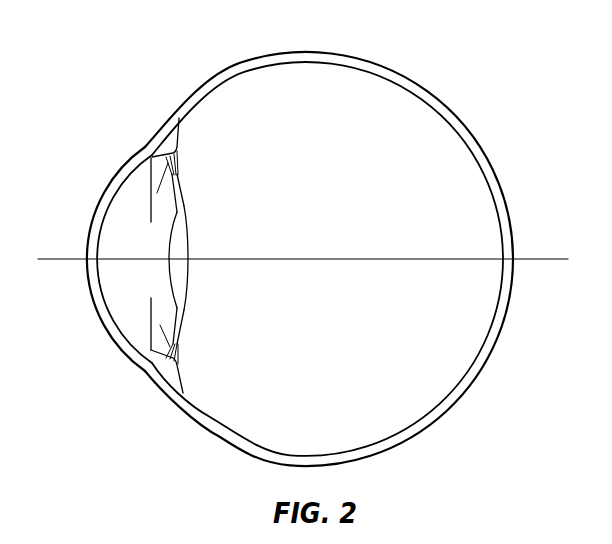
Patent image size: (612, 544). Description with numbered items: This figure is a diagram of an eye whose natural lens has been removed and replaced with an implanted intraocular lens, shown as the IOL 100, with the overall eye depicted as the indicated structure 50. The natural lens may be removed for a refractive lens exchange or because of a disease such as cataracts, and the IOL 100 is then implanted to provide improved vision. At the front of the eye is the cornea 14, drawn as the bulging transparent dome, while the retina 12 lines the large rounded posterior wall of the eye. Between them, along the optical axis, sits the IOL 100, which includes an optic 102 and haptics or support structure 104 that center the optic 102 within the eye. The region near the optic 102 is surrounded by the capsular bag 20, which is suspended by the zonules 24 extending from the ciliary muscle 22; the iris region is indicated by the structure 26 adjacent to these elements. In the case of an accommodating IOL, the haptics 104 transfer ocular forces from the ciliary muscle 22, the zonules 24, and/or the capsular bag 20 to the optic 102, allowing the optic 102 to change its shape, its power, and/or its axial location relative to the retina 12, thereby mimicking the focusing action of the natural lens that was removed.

The eye 50 is at (296, 251).
The retina 12 is at (487, 332).
The cornea 14 is at (94, 308).
The capsular bag 20 is at (185, 308).
The ciliary muscle 22 is at (183, 388).
The zonules 24 is at (175, 350).
The iris 26 is at (148, 330).
The IOL 100 is at (137, 241).
The optic 102 is at (180, 250).
The haptics or support structure 104 is at (183, 205).